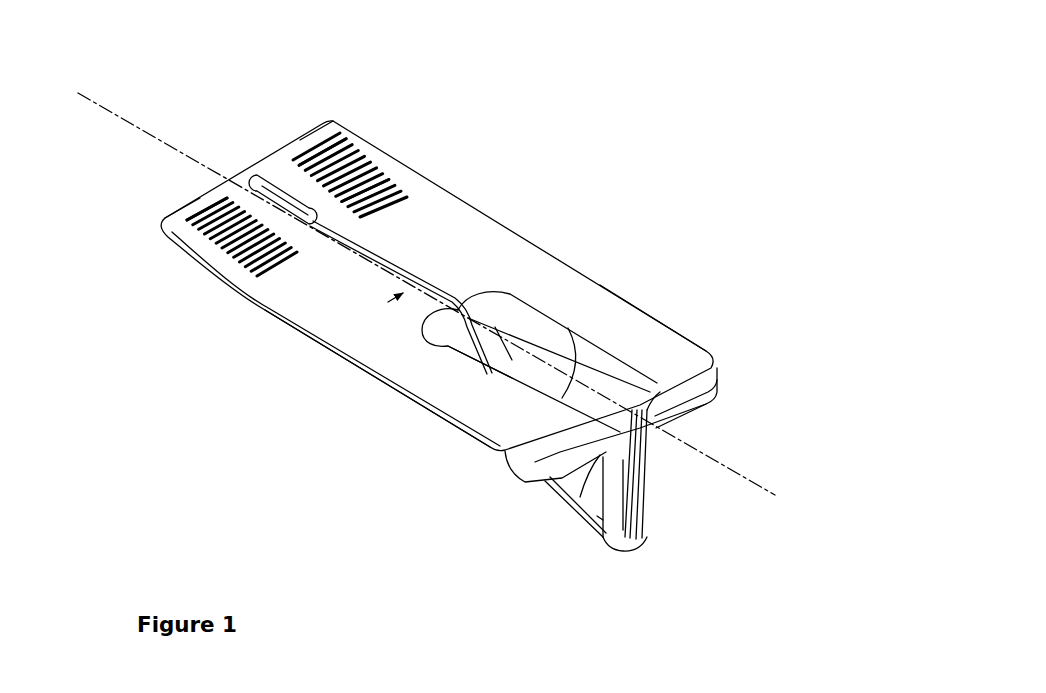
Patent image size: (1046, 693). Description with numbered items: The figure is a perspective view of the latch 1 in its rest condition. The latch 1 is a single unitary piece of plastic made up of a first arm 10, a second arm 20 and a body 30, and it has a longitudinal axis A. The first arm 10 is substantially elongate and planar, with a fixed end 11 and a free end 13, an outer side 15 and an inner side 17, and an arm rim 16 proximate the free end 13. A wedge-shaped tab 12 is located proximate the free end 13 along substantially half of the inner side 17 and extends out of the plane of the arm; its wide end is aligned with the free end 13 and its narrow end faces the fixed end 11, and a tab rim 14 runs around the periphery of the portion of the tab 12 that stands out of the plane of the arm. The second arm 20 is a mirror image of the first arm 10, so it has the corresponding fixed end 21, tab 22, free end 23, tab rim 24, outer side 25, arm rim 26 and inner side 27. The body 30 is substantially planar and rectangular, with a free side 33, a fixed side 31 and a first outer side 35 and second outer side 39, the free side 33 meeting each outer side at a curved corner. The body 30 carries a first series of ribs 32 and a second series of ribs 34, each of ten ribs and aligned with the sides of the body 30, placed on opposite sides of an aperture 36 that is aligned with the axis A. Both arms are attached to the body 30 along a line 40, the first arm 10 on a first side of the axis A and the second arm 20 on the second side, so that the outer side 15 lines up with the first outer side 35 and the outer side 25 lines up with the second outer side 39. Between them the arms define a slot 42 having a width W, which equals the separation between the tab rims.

The latch 1 is at (616, 95).
The first arm 10 is at (560, 281).
The fixed end 11 is at (420, 273).
The tab 12 is at (647, 517).
The free end 13 is at (688, 398).
The tab rim 14 is at (648, 454).
The outer side 15 is at (647, 311).
The arm rim 16 is at (688, 407).
The inner side 17 is at (447, 291).
The second arm 20 is at (383, 358).
The fixed end 21 is at (262, 284).
The tab 22 is at (617, 518).
The free end 23 is at (540, 481).
The tab rim 24 is at (603, 530).
The outer side 25 is at (418, 410).
The arm rim 26 is at (597, 516).
The inner side 27 is at (440, 297).
The body 30 is at (303, 137).
The fixed side 31 is at (410, 197).
The first series of ribs 32 is at (388, 153).
The free side 33 is at (190, 191).
The second series of ribs 34 is at (170, 228).
The first outer side 35 is at (378, 124).
The aperture 36 is at (266, 180).
The second outer side 39 is at (183, 257).
The line 40 is at (282, 312).
The slot 42 is at (409, 279).
The longitudinal axis A is at (108, 108).
The width W is at (432, 272).